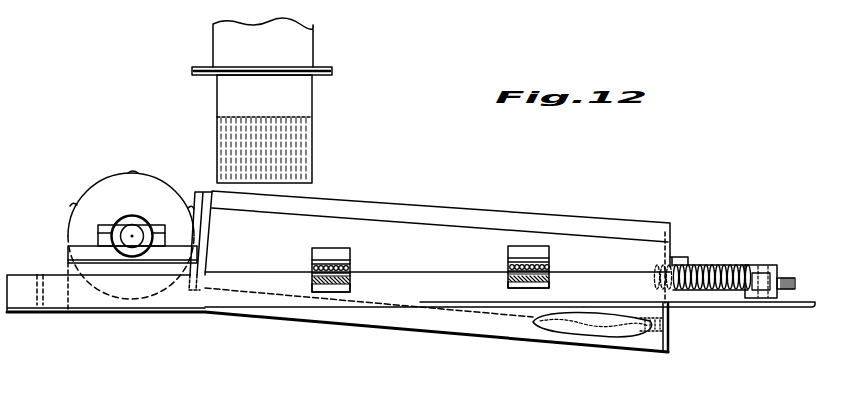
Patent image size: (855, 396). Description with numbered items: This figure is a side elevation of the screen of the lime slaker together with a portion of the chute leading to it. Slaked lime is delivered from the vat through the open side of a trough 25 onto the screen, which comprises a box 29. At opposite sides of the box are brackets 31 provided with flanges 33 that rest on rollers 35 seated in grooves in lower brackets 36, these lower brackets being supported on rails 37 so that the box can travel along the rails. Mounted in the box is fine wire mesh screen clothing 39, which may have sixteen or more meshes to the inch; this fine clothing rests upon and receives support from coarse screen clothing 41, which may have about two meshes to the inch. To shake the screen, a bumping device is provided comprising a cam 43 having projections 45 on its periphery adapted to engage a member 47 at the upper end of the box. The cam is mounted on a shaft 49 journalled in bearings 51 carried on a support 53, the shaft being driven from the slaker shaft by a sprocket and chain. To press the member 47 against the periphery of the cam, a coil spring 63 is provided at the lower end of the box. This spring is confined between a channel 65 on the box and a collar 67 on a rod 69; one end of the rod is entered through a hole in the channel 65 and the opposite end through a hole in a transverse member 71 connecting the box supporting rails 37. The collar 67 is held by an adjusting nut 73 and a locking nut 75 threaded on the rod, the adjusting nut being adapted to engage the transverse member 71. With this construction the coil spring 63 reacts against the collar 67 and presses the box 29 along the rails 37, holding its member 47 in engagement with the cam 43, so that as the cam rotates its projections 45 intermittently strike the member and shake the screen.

The trough 25 is at (300, 63).
The box 29 is at (526, 218).
The brackets 31 is at (351, 254).
The flanges 33 is at (351, 265).
The rollers 35 is at (351, 279).
The brackets 36 is at (351, 288).
The rails 37 is at (430, 273).
The fine wire mesh screen clothing 39 is at (666, 323).
The coarse screen clothing 41 is at (662, 336).
The cam 43 is at (100, 191).
The projections 45 is at (133, 172).
The member 47 is at (196, 197).
The shaft 49 is at (131, 235).
The bearings 51 is at (146, 224).
The support 53 is at (85, 248).
The coil spring 63 is at (694, 264).
The channel 65 is at (681, 259).
The collar 67 is at (752, 266).
The rod 69 is at (790, 279).
The transverse member 71 is at (776, 285).
The adjusting nut 73 is at (759, 288).
The locking nut 75 is at (769, 288).